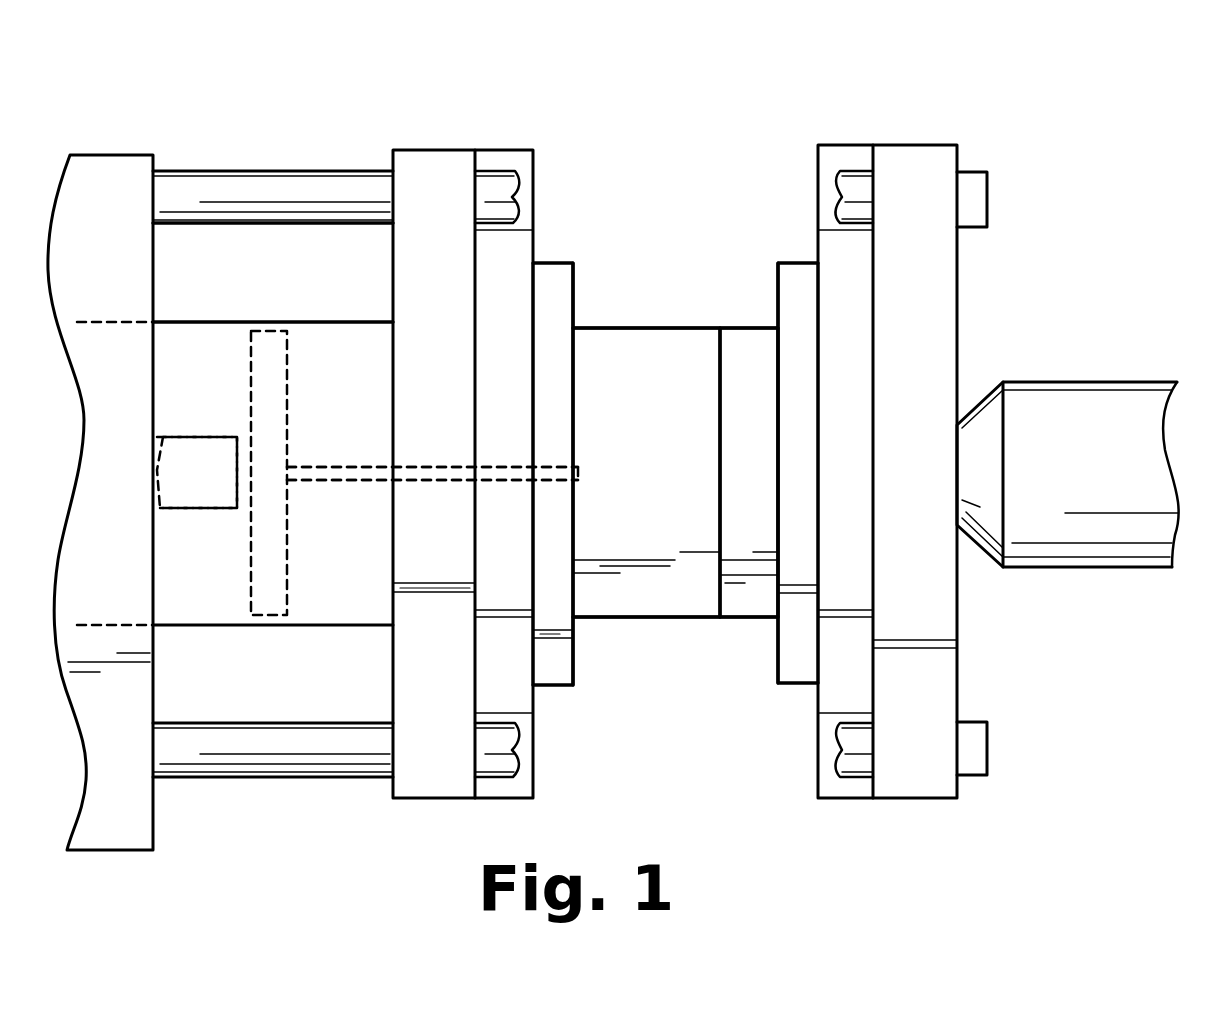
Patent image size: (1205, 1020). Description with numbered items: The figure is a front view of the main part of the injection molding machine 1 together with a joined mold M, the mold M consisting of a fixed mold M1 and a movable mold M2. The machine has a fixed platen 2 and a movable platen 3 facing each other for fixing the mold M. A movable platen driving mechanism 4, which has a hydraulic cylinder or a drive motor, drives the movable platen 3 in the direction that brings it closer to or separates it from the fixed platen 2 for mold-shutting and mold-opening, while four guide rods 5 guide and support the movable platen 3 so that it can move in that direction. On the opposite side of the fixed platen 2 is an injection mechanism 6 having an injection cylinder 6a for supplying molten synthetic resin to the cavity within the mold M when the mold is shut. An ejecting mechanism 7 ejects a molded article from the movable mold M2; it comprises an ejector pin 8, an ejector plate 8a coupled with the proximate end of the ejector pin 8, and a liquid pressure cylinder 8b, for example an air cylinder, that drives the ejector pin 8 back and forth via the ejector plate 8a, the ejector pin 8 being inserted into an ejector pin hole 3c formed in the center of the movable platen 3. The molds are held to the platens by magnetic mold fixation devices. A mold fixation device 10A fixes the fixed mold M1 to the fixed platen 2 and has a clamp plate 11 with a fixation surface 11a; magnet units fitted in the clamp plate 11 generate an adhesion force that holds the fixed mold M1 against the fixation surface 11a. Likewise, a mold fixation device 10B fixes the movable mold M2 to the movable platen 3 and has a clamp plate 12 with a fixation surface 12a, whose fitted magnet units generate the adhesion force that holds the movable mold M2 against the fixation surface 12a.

The injection molding machine 1 is at (1110, 116).
The fixed platen 2 is at (958, 160).
The movable platen 3 is at (477, 160).
The ejector pin hole 3c is at (428, 482).
The movable platen driving mechanism 4 is at (190, 305).
The guide rods 5 is at (272, 168).
The injection mechanism 6 is at (1080, 379).
The injection cylinder 6a is at (1128, 378).
The ejecting mechanism 7 is at (232, 598).
The ejector pin 8 is at (356, 482).
The ejector plate 8a is at (288, 556).
The liquid pressure cylinder 8b is at (196, 512).
The mold fixation device 10A is at (800, 704).
The mold fixation device 10B is at (553, 704).
The clamp plate 11 is at (816, 247).
The fixation surface 11a is at (816, 370).
The clamp plate 12 is at (535, 248).
The fixation surface 12a is at (536, 370).
The mold M is at (767, 686).
The fixed mold M1 is at (748, 622).
The movable mold M2 is at (643, 622).